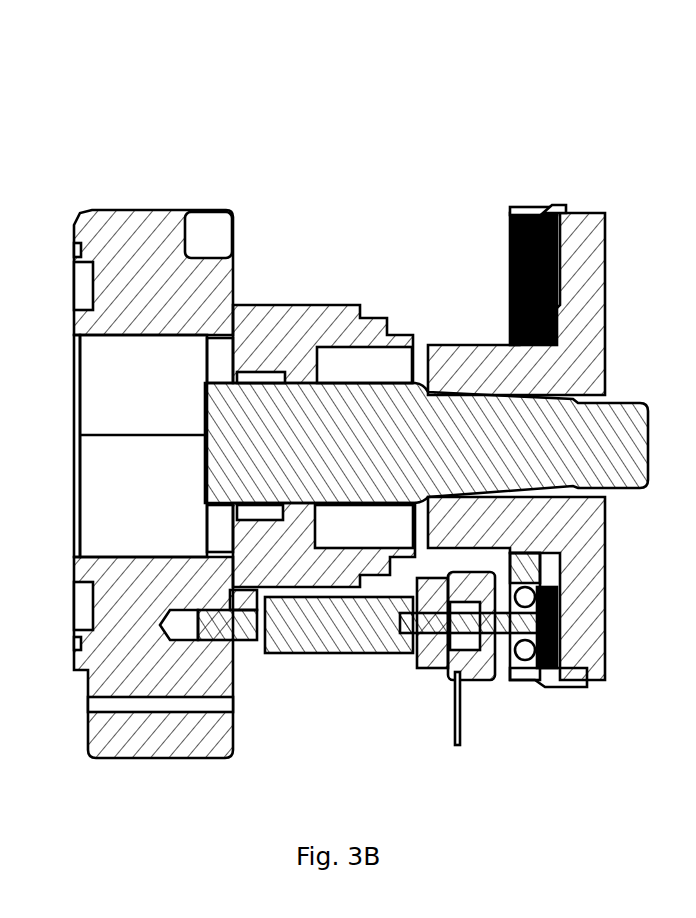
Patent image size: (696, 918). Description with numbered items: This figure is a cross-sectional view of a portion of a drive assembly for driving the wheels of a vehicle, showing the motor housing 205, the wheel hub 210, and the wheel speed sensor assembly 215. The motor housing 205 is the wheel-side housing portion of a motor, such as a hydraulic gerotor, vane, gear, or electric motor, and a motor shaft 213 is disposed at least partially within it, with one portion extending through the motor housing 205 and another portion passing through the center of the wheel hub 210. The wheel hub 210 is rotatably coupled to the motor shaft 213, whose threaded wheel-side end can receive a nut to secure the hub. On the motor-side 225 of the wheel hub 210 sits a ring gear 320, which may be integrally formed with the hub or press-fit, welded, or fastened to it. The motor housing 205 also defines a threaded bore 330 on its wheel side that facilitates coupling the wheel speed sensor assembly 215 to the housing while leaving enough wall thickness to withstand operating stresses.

The motor housing 205 is at (107, 230).
The wheel hub 210 is at (580, 263).
The motor shaft 213 is at (597, 404).
The wheel speed sensor assembly 215 is at (325, 630).
The motor-side 225 is at (468, 247).
The ring gear 320 is at (523, 215).
The threaded bore 330 is at (180, 632).